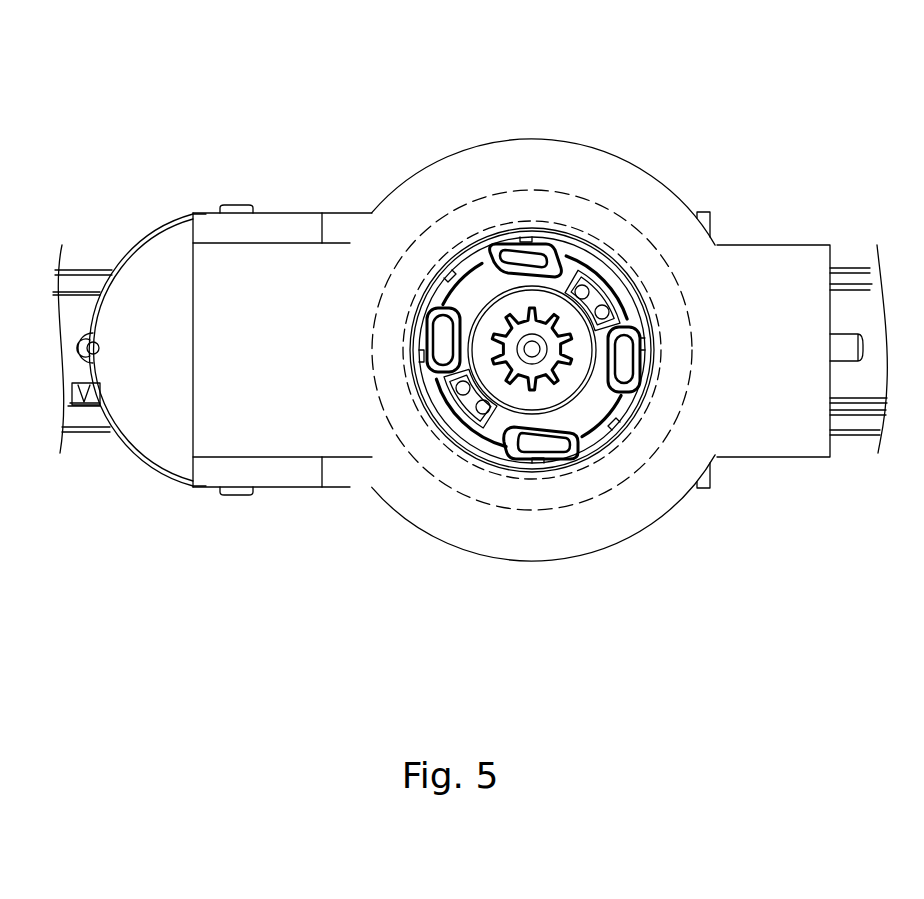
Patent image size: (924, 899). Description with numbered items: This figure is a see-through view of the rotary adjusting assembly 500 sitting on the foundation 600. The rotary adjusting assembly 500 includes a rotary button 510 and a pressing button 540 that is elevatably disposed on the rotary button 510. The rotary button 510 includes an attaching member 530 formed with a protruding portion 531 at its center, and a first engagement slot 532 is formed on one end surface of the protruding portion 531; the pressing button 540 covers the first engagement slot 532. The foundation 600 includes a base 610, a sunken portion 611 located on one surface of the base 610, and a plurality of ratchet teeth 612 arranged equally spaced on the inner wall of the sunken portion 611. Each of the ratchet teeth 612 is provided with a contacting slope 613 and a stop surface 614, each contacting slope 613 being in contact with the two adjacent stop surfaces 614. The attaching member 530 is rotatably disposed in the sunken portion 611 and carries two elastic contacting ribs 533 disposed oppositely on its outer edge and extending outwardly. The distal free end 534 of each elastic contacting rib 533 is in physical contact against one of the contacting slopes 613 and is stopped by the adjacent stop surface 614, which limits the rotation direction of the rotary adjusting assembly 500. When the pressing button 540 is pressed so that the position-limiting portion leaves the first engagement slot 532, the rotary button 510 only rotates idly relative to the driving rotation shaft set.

The rotary adjusting assembly 500 is at (518, 617).
The rotary button 510 is at (490, 495).
The pressing button 540 is at (447, 440).
The foundation 600 is at (392, 58).
The base 610 is at (618, 168).
The sunken portion 611 is at (558, 230).
The ratchet teeth 612 is at (368, 104).
The contacting slope 613 is at (447, 252).
The stop surface 614 is at (465, 253).
The attaching member 530 is at (785, 135).
The protruding portion 531 is at (590, 333).
The first engagement slot 532 is at (578, 371).
The elastic contacting ribs 533 is at (570, 315).
The free end 534 is at (572, 447).